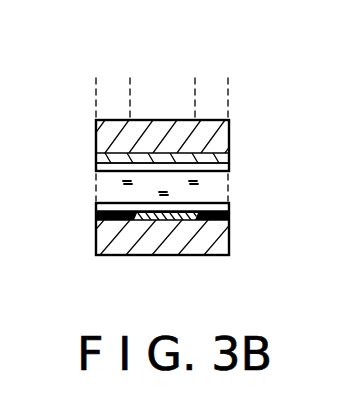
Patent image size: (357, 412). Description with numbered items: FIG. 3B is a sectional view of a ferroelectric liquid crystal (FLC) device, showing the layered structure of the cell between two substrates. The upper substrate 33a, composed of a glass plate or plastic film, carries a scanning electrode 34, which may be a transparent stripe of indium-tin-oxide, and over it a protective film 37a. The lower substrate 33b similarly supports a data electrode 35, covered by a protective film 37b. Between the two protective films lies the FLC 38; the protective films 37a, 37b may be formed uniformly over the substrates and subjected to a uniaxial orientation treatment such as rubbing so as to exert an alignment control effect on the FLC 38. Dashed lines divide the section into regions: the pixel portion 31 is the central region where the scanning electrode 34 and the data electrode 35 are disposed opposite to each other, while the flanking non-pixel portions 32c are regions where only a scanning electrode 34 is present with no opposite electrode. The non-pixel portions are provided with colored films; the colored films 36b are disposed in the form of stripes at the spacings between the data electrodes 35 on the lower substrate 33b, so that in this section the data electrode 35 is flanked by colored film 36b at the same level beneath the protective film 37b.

The pixel portion 31 is at (165, 98).
The non-pixel portion 32c is at (115, 95).
The substrate 33a is at (229, 130).
The scanning electrode 34 is at (229, 153).
The protective film 37a is at (229, 167).
The FLC 38 is at (220, 188).
The protective film 37b is at (229, 207).
The colored film 36b is at (229, 216).
The data electrode 35 is at (185, 214).
The substrate 33b is at (229, 238).